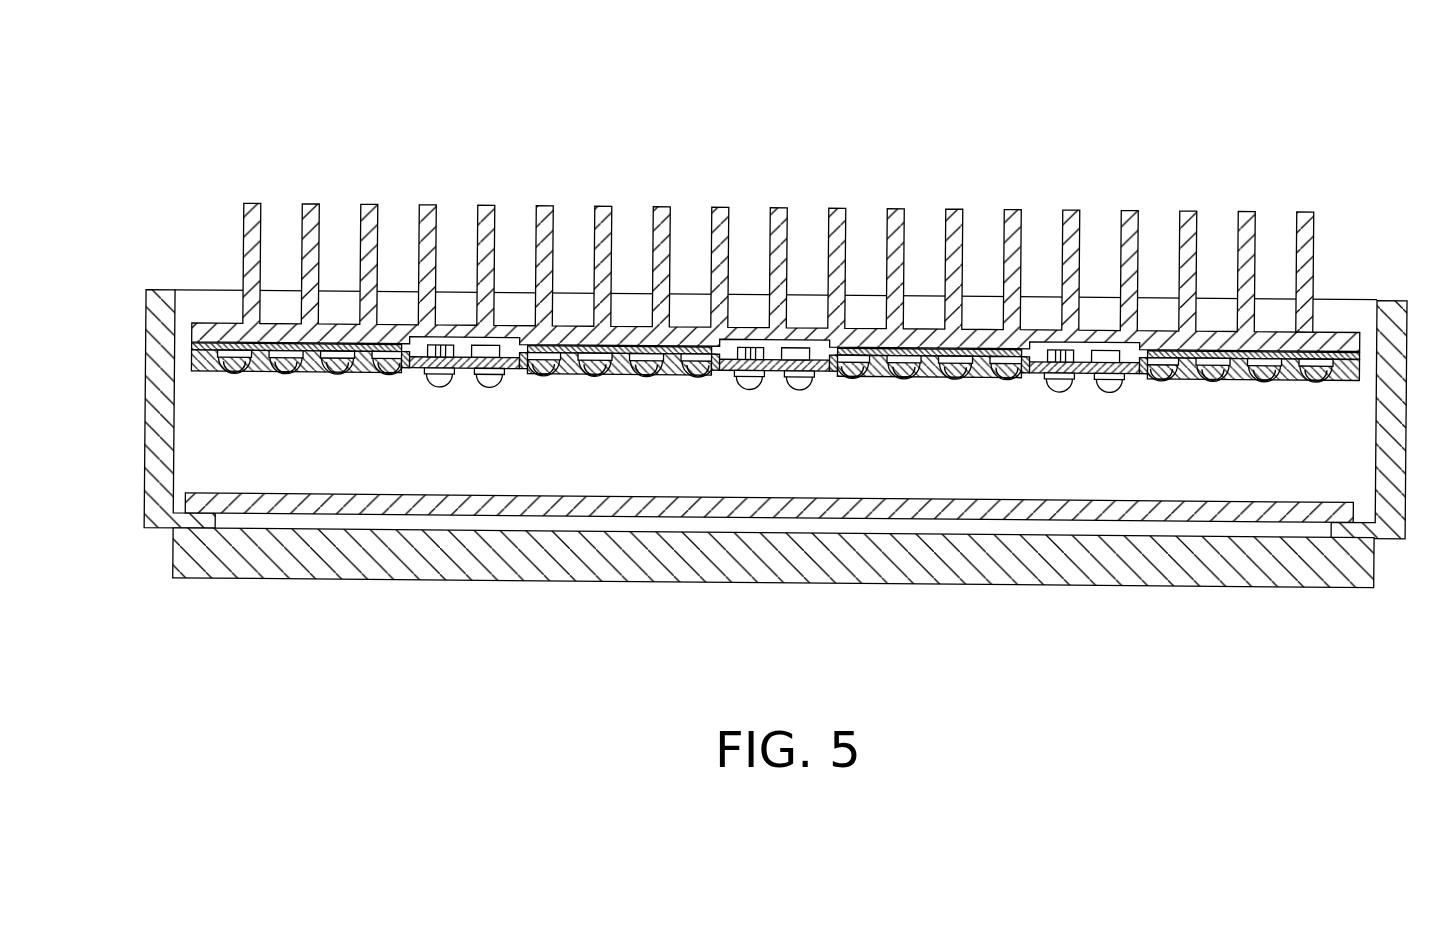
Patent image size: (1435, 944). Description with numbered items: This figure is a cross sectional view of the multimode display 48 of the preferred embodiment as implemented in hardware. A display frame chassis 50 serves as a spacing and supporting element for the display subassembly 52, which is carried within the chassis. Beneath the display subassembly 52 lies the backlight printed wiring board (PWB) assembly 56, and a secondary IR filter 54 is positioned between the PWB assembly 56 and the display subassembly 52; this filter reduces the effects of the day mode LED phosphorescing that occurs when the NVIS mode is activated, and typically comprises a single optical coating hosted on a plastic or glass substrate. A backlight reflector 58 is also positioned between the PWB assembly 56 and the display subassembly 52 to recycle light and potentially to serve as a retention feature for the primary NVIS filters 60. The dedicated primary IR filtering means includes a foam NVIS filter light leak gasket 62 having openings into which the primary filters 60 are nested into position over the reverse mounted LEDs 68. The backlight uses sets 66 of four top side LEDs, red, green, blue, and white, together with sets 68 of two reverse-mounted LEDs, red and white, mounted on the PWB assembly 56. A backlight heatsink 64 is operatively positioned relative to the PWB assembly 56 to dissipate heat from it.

The multimode display 48 is at (740, 162).
The display frame chassis 50 is at (150, 470).
The display subassembly 52 is at (317, 580).
The secondary IR filter 54 is at (508, 507).
The backlight printed wiring board (PWB) assembly 56 is at (215, 330).
The backlight reflector 58 is at (197, 374).
The primary NVIS filters 60 is at (462, 352).
The foam NVIS filter light leak gasket 62 is at (193, 351).
The backlight heatsink 64 is at (1316, 245).
The sets of four top side LEDs 66 is at (215, 383).
The sets of two reverse-mounted LEDs 68 is at (447, 348).